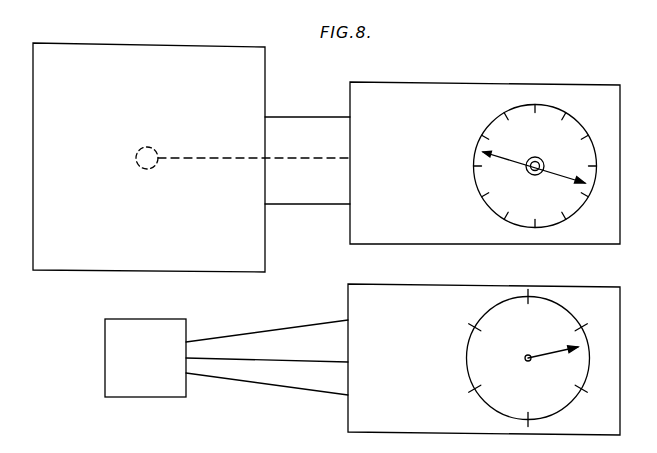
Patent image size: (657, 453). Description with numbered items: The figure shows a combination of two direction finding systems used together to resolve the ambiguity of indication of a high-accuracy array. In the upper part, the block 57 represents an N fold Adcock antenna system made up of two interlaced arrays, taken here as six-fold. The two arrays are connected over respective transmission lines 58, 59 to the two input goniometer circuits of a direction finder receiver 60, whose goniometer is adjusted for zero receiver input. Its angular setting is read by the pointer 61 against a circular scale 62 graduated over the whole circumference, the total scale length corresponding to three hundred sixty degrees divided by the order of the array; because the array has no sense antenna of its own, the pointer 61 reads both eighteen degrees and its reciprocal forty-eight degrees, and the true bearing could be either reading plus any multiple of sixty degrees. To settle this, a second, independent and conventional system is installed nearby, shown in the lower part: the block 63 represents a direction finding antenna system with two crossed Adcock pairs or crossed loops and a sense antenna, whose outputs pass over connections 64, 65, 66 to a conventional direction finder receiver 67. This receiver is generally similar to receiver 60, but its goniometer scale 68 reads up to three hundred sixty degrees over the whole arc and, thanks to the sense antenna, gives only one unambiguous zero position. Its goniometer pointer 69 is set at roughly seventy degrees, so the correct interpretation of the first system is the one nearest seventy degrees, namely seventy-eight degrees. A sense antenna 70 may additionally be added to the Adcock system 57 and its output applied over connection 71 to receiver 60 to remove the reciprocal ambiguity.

The N fold Adcock antenna system 57 is at (274, 62).
The transmission line 58 is at (280, 118).
The transmission line 59 is at (297, 205).
The direction finder receiver 60 is at (423, 82).
The pointer 61 is at (552, 176).
The circular scale 62 is at (489, 126).
The direction finding antenna system 63 is at (105, 357).
The connection 64 is at (223, 337).
The connection 65 is at (270, 360).
The connection 66 is at (282, 385).
The direction finder receiver 67 is at (415, 283).
The goniometer scale 68 is at (467, 351).
The goniometer pointer 69 is at (555, 352).
The sense antenna 70 is at (152, 148).
The connection 71 is at (254, 148).